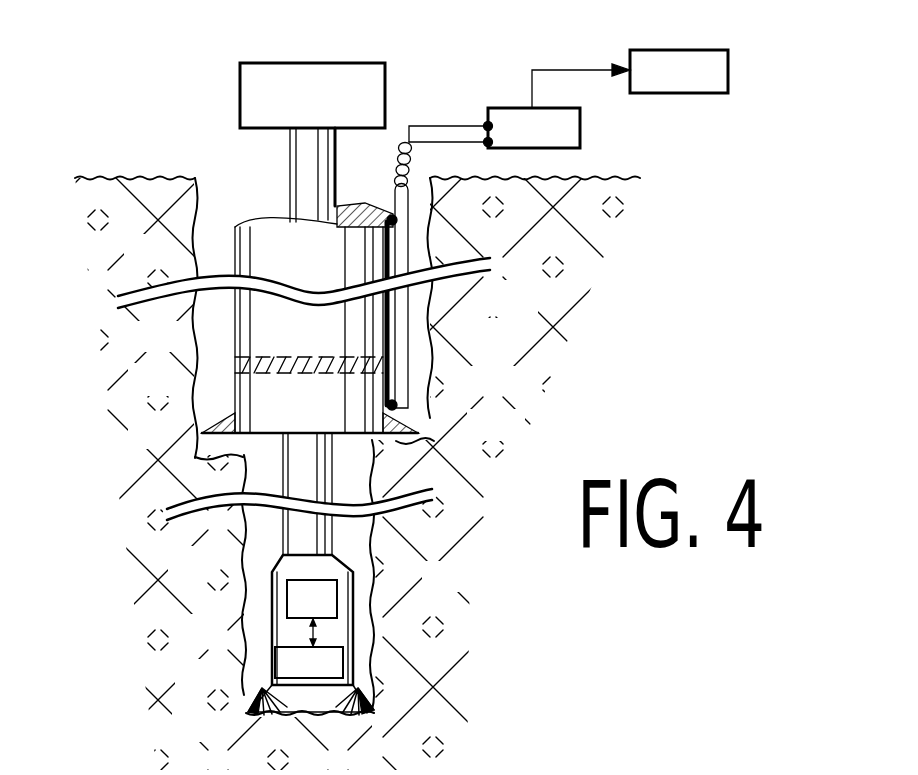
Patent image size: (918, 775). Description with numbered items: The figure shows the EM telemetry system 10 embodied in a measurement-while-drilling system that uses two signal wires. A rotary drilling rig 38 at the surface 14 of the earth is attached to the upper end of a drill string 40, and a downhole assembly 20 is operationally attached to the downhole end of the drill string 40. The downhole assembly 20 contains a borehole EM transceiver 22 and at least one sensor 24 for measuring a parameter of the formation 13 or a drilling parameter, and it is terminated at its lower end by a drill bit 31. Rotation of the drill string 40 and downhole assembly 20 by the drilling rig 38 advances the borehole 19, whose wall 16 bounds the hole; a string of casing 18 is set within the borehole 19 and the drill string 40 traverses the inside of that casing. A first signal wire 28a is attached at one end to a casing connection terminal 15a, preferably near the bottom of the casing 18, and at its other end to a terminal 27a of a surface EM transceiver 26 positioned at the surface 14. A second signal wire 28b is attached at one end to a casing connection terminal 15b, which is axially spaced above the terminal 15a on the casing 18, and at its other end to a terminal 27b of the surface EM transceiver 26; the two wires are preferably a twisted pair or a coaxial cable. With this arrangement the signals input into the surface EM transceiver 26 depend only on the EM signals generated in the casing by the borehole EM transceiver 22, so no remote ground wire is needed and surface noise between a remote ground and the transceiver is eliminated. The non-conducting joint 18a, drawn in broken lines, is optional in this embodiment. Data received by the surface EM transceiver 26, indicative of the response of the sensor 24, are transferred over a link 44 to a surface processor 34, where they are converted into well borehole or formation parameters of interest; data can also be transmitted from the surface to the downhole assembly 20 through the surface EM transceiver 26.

The EM telemetry system 10 is at (418, 65).
The formation 13 is at (164, 392).
The surface 14 is at (136, 177).
The casing connection terminal 15a is at (395, 409).
The casing connection terminal 15b is at (396, 221).
The wall of the borehole 16 is at (198, 190).
The casing 18 is at (235, 245).
The non-conducting joint 18a is at (235, 362).
The borehole 19 is at (437, 314).
The downhole assembly 20 is at (376, 600).
The borehole EM transceiver 22 is at (288, 595).
The sensor 24 is at (277, 658).
The surface EM transceiver 26 is at (580, 125).
The terminal of the surface EM transceiver 27a is at (484, 125).
The terminal of the surface EM transceiver 27b is at (483, 144).
The first signal wire 28a is at (410, 205).
The second signal wire 28b is at (393, 208).
The drill bit 31 is at (262, 697).
The surface processor 34 is at (728, 70).
The rotary drilling rig 38 is at (254, 97).
The drill string 40 is at (303, 166).
The link 44 is at (557, 68).